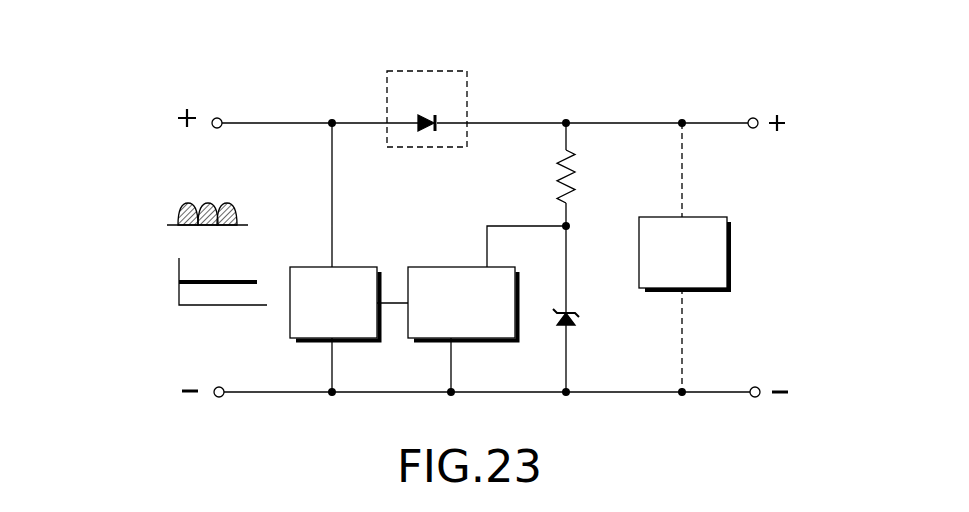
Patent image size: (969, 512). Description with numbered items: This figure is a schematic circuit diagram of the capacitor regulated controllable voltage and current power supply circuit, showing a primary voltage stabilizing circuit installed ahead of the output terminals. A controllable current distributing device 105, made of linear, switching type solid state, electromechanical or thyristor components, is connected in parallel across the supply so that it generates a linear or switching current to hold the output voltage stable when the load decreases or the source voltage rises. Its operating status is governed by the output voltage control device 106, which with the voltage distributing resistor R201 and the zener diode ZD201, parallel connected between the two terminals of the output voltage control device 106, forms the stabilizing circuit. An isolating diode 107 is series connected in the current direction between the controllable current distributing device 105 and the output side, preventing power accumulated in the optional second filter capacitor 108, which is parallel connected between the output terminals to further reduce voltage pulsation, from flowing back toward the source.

The controllable current distributing device 105 is at (245, 342).
The output voltage control device 106 is at (447, 240).
The isolating diode 107 is at (342, 52).
The second filter capacitor 108 is at (742, 194).
The voltage distributing resistor R201 is at (529, 176).
The zener diode ZD201 is at (609, 334).